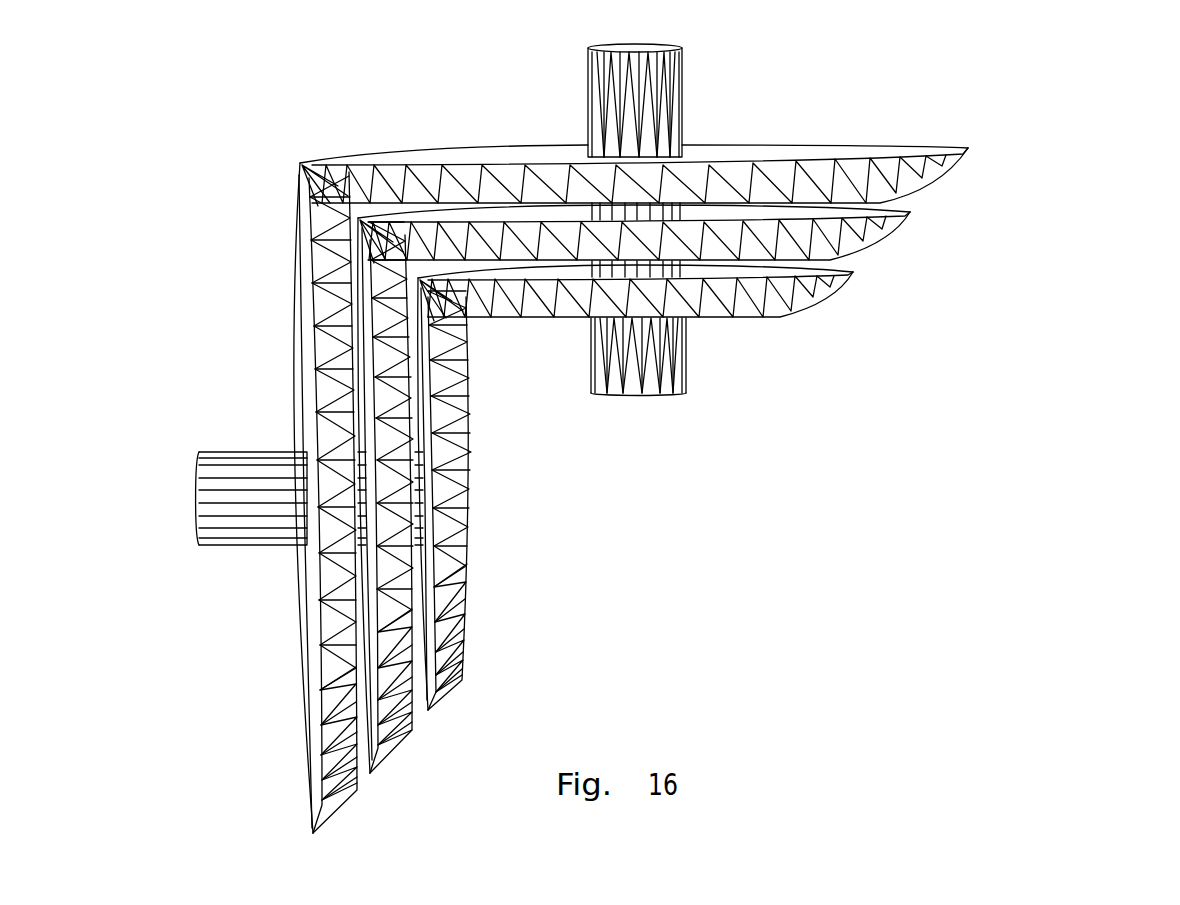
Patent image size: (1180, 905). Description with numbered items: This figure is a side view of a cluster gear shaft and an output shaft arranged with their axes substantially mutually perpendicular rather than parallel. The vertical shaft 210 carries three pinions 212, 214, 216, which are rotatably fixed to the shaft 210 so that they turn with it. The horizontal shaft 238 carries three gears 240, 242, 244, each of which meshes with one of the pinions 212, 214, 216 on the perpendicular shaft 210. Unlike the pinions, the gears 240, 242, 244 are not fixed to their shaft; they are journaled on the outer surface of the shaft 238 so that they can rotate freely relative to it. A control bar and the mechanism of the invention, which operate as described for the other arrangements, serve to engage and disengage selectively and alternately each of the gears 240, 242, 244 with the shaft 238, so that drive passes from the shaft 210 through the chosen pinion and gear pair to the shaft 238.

The shaft 210 is at (648, 363).
The pinion 212 is at (808, 308).
The pinion 214 is at (862, 242).
The pinion 216 is at (917, 178).
The shaft 238 is at (213, 458).
The gear 240 is at (453, 425).
The gear 242 is at (385, 295).
The gear 244 is at (345, 245).